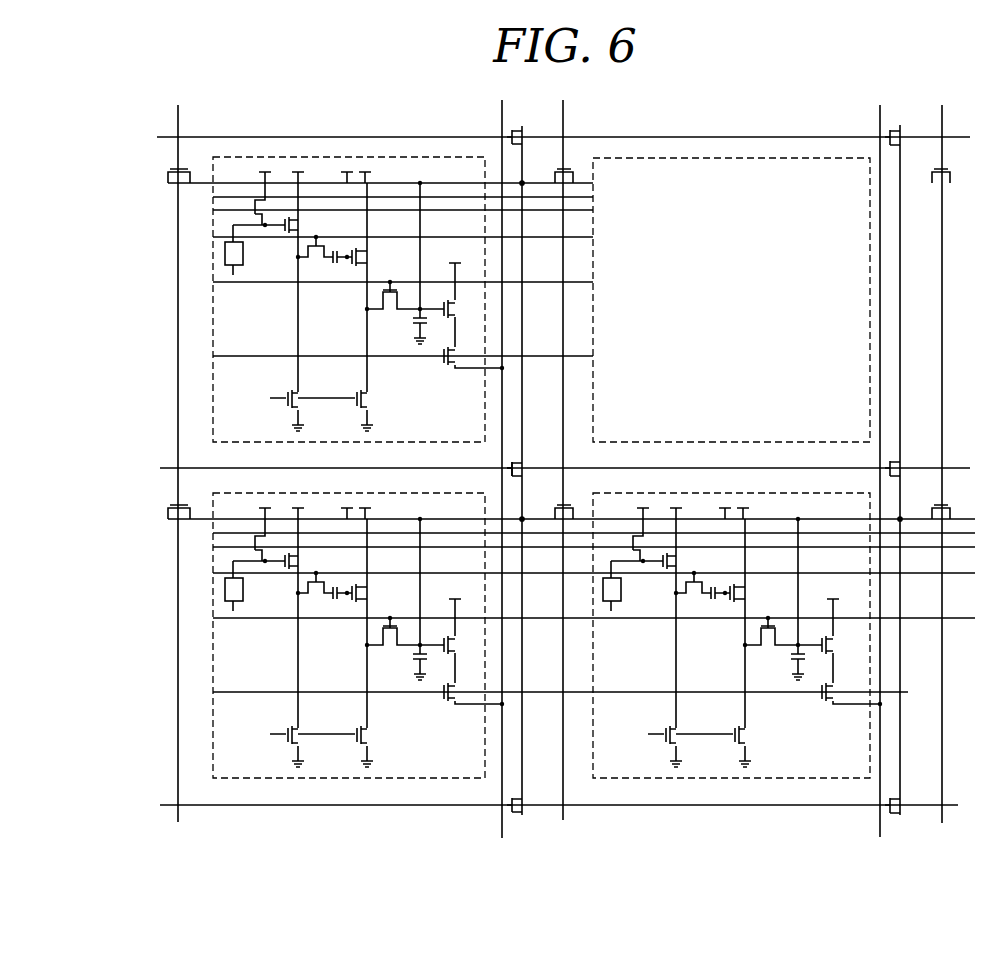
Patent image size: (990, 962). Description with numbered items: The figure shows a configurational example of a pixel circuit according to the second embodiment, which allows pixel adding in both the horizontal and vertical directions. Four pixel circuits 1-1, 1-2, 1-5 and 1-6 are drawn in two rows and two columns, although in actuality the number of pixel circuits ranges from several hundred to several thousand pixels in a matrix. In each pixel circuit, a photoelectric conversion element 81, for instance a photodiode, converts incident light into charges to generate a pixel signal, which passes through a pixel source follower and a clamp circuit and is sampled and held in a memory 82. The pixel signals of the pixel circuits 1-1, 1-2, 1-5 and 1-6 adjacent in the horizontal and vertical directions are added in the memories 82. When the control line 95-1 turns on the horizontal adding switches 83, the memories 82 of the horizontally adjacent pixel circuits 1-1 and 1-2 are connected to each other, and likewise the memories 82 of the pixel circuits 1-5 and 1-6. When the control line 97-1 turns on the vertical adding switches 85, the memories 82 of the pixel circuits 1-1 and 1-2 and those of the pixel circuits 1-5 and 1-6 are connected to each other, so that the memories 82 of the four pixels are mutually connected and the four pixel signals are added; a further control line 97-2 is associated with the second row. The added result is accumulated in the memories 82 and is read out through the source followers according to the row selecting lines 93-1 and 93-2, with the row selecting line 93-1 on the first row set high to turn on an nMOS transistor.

The pixel circuit 1-1 is at (245, 780).
The pixel circuit 1-2 is at (822, 780).
The pixel circuit 1-5 is at (272, 157).
The pixel circuit 1-6 is at (690, 158).
The photoelectric conversion element 81 is at (243, 256).
The memory 82 is at (415, 319).
The horizontal adding switch 83 is at (562, 168).
The vertical adding switch 85 is at (522, 462).
The row selecting line 93-1 is at (246, 688).
The row selecting line 93-2 is at (246, 352).
The control line 95-1 is at (565, 812).
The control line 97-1 is at (168, 468).
The control line 97-2 is at (170, 137).